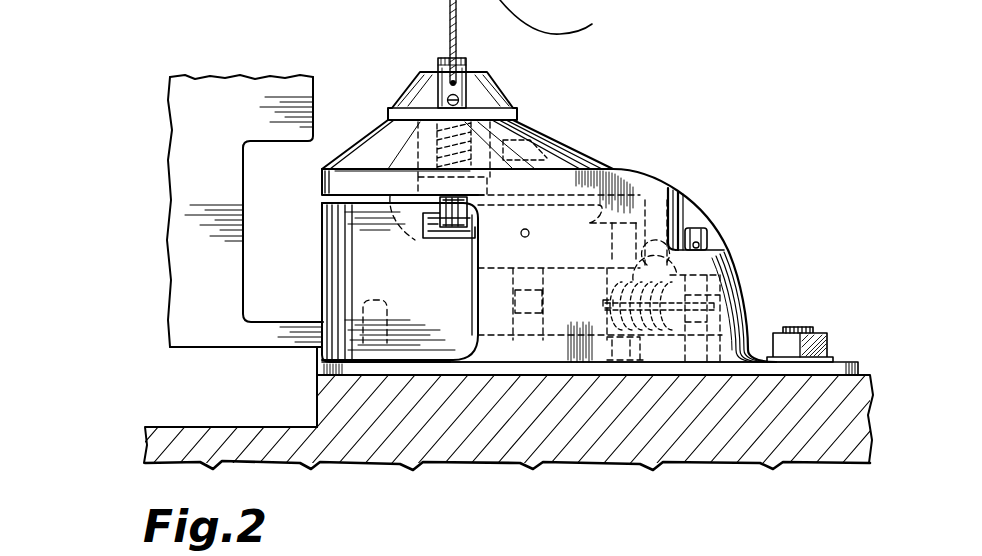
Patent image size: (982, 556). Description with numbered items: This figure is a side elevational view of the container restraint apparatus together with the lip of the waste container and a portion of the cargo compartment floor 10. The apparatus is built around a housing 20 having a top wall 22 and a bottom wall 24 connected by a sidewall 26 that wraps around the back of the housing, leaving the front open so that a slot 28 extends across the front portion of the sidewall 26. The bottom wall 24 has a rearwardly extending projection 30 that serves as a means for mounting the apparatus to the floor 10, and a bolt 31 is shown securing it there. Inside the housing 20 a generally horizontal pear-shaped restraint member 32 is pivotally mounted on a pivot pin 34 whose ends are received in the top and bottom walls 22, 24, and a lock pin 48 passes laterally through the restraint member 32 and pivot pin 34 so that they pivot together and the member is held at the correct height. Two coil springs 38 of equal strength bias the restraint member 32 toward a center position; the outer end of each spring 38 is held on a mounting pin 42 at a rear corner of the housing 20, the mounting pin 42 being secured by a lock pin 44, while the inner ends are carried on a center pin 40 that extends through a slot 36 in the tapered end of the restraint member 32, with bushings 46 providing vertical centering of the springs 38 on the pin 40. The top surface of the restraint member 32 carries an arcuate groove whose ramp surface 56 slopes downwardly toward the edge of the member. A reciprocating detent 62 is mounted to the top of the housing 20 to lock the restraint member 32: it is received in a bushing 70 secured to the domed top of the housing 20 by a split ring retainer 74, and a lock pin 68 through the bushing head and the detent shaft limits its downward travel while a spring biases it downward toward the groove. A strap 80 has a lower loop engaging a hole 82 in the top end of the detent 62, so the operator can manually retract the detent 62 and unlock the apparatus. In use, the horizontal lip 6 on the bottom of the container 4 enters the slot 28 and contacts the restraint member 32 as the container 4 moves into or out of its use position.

The container 4 is at (259, 71).
The horizontal lip 6 is at (281, 350).
The cargo compartment floor 10 is at (548, 419).
The housing 20 is at (659, 183).
The top wall 22 is at (613, 170).
The bottom wall 24 is at (417, 370).
The sidewall 26 is at (740, 273).
The slot 28 is at (323, 197).
The rearwardly extending projection 30 is at (848, 361).
The bolt 31 is at (814, 330).
The restraint member 32 is at (395, 264).
The pivot pin 34 is at (559, 304).
The slot 36 is at (670, 285).
The coil spring 38 is at (685, 212).
The center pin 40 is at (610, 238).
The mounting pin 42 is at (720, 315).
The lock pin 44 is at (706, 240).
The bushing 46 is at (597, 305).
The lock pin 48 is at (532, 233).
The ramp surface 56 is at (444, 238).
The detent 62 is at (440, 212).
The lock pin 68 is at (459, 100).
The bushing 70 is at (517, 109).
The split ring retainer 74 is at (388, 157).
The strap 80 is at (458, 22).
The hole 82 is at (466, 71).